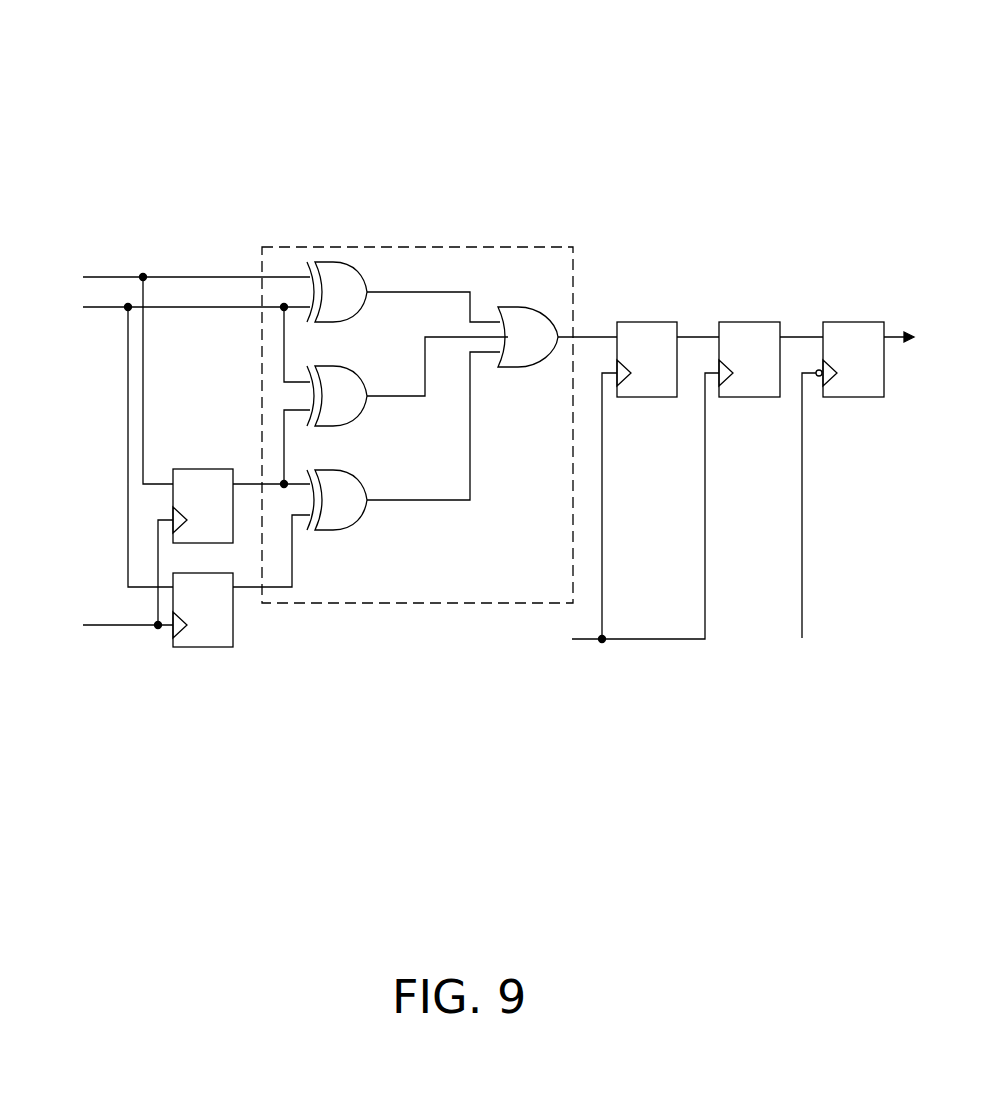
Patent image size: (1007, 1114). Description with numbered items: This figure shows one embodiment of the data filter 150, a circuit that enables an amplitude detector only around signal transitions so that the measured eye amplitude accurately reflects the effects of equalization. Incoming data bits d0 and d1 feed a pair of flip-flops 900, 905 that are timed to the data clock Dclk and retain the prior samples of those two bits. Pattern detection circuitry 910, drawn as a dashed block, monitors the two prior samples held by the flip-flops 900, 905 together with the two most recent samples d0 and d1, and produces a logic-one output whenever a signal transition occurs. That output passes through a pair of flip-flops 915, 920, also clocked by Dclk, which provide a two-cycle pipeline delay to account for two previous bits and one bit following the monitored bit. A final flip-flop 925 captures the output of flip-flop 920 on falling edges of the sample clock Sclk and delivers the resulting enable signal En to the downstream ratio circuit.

The data filter 150 is at (488, 336).
The flip-flop 900 is at (231, 636).
The flip-flop 905 is at (231, 531).
The pattern detection circuitry 910 is at (417, 425).
The flip-flop 915 is at (675, 384).
The flip-flop 920 is at (777, 384).
The final flip-flop 925 is at (881, 384).